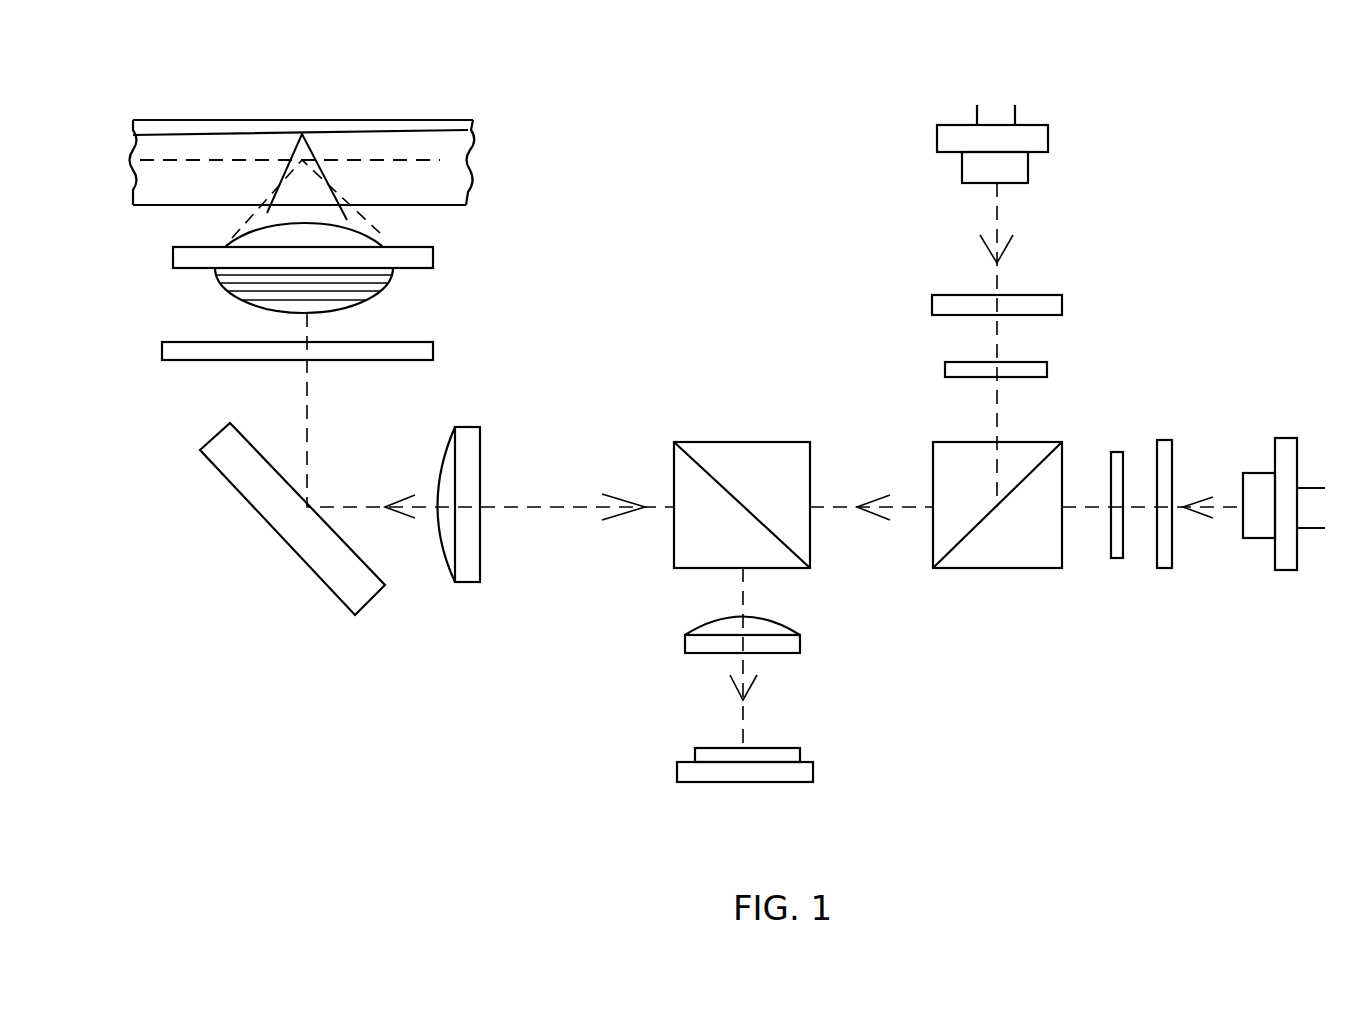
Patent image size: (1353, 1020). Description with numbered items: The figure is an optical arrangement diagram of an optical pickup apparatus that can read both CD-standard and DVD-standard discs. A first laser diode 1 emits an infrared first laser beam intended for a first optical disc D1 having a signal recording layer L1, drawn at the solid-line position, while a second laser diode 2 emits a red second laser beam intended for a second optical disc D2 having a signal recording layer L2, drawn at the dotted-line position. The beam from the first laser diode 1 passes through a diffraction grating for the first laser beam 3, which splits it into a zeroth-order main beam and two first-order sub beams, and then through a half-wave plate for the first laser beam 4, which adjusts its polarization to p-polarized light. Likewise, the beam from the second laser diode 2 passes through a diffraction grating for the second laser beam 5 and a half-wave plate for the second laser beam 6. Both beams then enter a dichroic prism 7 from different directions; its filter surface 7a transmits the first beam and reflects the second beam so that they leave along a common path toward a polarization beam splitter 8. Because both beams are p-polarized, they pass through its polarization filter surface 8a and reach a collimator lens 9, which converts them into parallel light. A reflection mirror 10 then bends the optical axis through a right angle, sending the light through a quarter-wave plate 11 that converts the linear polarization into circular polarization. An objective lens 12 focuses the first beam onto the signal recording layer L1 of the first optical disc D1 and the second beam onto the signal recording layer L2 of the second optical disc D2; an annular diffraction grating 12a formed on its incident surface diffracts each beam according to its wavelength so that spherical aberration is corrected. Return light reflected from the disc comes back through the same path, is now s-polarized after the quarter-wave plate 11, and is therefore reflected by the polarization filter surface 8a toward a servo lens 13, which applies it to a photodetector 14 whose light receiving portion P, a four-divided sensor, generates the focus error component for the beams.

The first laser diode 1 is at (1285, 565).
The second laser diode 2 is at (1043, 140).
The diffraction grating for the first laser beam 3 is at (1163, 565).
The half-wave plate for the first laser beam 4 is at (1115, 555).
The diffraction grating for the second laser beam 5 is at (1055, 305).
The half-wave plate for the second laser beam 6 is at (1040, 368).
The dichroic prism 7 is at (1033, 563).
The filter surface 7a is at (968, 538).
The polarization beam splitter 8 is at (780, 442).
The polarization filter surface 8a is at (707, 470).
The collimator lens 9 is at (470, 573).
The reflection mirror 10 is at (340, 585).
The quarter-wave plate 11 is at (420, 352).
The objective lens 12 is at (423, 253).
The annular-shaped diffraction grating 12a is at (353, 288).
The servo lens 13 is at (800, 648).
The photodetector 14 is at (810, 775).
The light receiving portion P is at (763, 757).
The signal recording layer L1 is at (452, 130).
The signal recording layer L2 is at (440, 160).
The first optical disc D1 is at (327, 120).
The second optical disc D2 is at (302, 131).